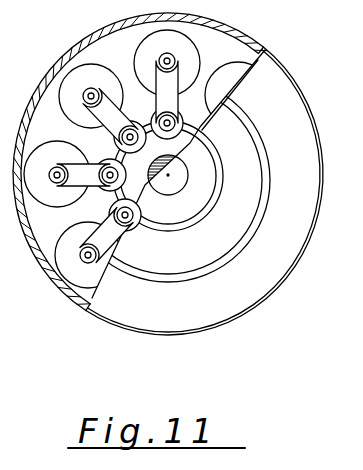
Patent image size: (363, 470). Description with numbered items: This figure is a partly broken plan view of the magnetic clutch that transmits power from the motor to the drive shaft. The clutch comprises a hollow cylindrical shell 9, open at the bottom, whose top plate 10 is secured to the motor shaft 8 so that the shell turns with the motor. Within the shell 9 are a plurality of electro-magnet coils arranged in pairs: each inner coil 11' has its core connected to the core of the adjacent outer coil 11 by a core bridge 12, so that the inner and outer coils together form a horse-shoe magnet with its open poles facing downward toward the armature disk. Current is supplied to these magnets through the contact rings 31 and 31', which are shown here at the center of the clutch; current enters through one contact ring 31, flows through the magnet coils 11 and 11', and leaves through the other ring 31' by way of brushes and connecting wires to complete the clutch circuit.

The motor shaft 8 is at (168, 175).
The hollow cylindrical shell 9 is at (45, 265).
The top plate 10 is at (258, 286).
The outer electro-magnet coil 11 is at (147, 182).
The inner electro-magnet coil 11' is at (141, 135).
The core bridge 12 is at (79, 172).
The contact ring 31 is at (179, 180).
The contact ring 31' is at (185, 176).